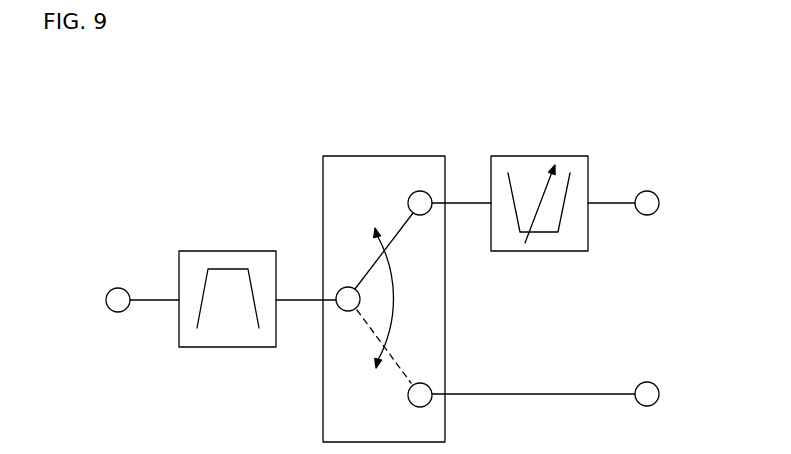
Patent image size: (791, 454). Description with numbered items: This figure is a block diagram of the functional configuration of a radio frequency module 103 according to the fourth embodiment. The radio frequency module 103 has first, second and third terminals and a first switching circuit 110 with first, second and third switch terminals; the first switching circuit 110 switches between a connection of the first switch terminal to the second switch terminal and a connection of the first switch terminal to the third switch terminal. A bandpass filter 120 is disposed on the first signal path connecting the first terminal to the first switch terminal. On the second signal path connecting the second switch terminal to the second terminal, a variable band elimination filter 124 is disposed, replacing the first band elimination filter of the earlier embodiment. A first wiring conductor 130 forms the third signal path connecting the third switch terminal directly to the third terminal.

The radio frequency module 103 is at (295, 105).
The first switching circuit 110 is at (397, 156).
The bandpass filter 120 is at (228, 251).
The variable band elimination filter 124 is at (590, 175).
The first wiring conductor 130 is at (540, 393).